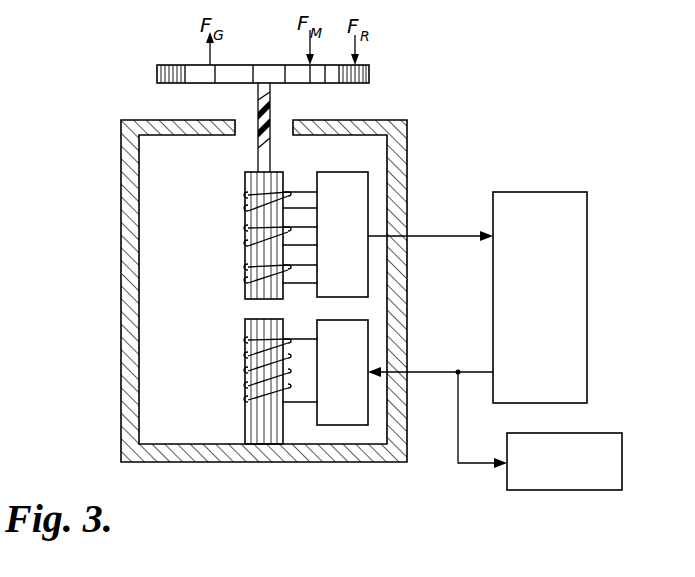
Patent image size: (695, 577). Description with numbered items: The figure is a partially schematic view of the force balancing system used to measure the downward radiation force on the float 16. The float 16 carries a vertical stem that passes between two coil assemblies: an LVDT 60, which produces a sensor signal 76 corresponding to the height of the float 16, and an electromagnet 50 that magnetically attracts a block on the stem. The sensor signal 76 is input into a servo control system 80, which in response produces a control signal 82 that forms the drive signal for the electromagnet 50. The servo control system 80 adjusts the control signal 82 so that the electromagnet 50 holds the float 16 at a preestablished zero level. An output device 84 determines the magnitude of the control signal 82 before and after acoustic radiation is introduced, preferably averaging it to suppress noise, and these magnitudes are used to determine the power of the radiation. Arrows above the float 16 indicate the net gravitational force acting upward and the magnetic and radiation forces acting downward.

The float 16 is at (157, 72).
The electromagnet 50 is at (350, 347).
The LVDT 60 is at (355, 192).
The sensor signal 76 is at (420, 236).
The servo control system 80 is at (570, 300).
The control signal 82 is at (432, 373).
The output device 84 is at (608, 433).